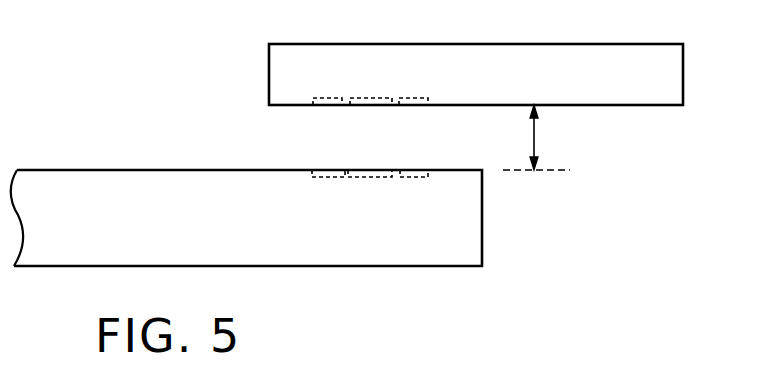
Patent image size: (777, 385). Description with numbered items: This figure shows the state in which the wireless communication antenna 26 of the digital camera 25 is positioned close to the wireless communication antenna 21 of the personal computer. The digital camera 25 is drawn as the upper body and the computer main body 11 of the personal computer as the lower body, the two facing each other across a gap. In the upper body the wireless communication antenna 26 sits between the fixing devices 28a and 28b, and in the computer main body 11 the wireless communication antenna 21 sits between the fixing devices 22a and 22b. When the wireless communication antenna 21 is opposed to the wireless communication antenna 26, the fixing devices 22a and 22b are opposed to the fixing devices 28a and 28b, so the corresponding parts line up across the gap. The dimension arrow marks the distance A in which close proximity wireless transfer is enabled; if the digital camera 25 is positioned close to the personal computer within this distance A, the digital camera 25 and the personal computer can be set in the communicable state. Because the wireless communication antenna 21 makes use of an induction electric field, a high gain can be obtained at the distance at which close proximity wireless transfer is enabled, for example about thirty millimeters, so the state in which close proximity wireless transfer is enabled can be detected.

The digital camera 25 is at (683, 73).
The wireless communication antenna 26 is at (380, 97).
The fixing device 28a is at (325, 97).
The fixing device 28b is at (418, 97).
The computer main body 11 is at (482, 243).
The wireless communication antenna 21 is at (380, 177).
The fixing device 22a is at (325, 177).
The fixing device 22b is at (418, 177).
The distance A is at (536, 137).